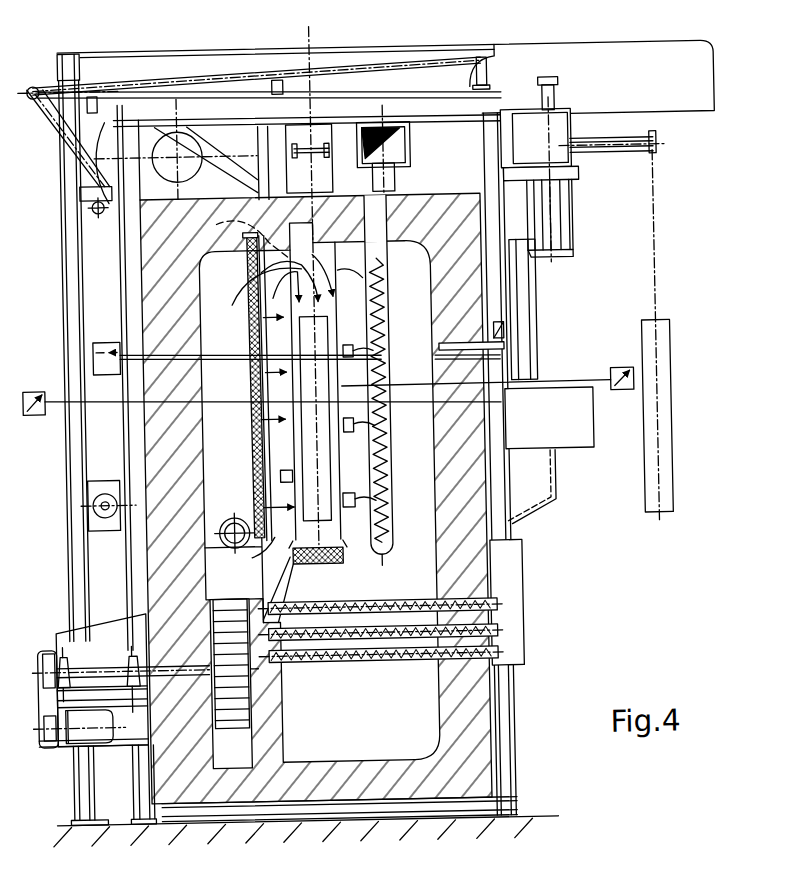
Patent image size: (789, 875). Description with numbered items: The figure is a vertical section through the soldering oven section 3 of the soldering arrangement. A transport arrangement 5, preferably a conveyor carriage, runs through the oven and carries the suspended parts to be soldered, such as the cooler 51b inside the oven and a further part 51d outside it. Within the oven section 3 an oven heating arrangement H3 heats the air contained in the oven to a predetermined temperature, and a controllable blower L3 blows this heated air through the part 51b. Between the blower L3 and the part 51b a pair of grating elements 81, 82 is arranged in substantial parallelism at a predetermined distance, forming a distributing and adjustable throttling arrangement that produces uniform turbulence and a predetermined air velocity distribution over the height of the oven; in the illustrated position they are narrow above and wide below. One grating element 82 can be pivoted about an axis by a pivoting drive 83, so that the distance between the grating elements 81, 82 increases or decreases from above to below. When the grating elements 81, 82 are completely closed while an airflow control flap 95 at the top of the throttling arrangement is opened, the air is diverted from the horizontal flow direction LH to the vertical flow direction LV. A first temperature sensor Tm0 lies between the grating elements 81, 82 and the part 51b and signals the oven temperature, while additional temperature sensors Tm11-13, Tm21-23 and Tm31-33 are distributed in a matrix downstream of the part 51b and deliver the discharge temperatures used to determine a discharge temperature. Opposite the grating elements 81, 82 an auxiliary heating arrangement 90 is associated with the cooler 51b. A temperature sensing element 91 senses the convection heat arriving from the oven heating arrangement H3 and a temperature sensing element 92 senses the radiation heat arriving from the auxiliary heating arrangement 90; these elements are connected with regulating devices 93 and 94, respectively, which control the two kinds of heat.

The transport arrangement 5 is at (323, 150).
The airflow control flap 95 is at (216, 225).
The pivoting drive 83 is at (90, 354).
The regulating device 93 is at (23, 391).
The temperature sensing element 91 is at (252, 335).
The grating element 81 is at (249, 382).
The grating element 82 is at (250, 420).
The part to be soldered 51b is at (286, 457).
The first temperature sensor Tm0 is at (256, 490).
The horizontal flow direction LH is at (263, 424).
The vertical flow direction LV is at (377, 285).
The additional temperature sensors Tm31-33 is at (350, 356).
The additional temperature sensors Tm21-23 is at (349, 428).
The additional temperature sensors Tm11-13 is at (349, 504).
The auxiliary heating arrangement 90 is at (376, 458).
The regulating device 94 is at (610, 376).
The temperature sensing element 92 is at (350, 371).
The part to be soldered 51d is at (660, 393).
The controllable blower L3 is at (63, 640).
The oven section 3 is at (340, 600).
The oven heating arrangement H3 is at (345, 665).